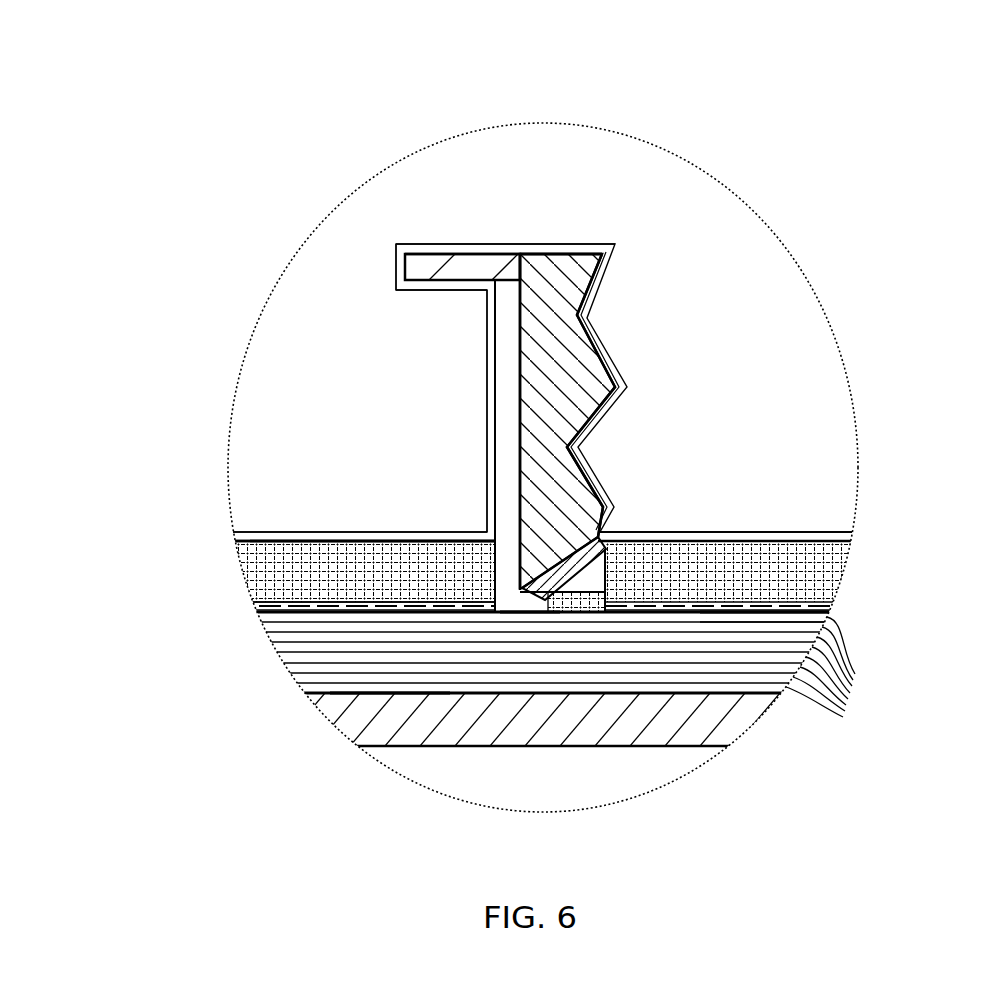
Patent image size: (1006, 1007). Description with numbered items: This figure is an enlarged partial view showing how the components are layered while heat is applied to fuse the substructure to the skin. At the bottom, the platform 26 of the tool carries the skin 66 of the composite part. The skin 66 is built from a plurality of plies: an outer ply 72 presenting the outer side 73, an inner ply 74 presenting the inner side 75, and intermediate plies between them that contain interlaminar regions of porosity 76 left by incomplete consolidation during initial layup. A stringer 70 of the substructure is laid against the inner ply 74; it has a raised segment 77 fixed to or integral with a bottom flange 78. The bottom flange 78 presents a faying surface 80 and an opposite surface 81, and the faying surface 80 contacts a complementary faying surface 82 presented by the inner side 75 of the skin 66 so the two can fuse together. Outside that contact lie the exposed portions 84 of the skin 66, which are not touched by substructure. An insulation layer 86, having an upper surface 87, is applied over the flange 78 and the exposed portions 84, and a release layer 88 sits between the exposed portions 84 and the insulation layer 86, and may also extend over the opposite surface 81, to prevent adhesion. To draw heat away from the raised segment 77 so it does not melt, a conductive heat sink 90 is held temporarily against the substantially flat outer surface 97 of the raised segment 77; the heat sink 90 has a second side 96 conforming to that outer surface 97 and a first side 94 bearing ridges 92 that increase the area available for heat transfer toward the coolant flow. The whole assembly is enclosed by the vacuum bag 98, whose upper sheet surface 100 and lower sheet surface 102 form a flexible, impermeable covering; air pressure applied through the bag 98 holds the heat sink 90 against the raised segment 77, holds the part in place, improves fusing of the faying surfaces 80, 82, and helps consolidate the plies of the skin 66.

The platform 26 is at (728, 705).
The skin 66 is at (265, 648).
The stringer 70 is at (413, 240).
The outer ply 72 is at (302, 693).
The outer side 73 is at (373, 697).
The inner ply 74 is at (257, 617).
The inner side 75 is at (818, 607).
The interlaminar regions of porosity 76 is at (834, 667).
The raised segment 77 is at (515, 408).
The bottom flange 78 is at (605, 533).
The faying surface 80 is at (530, 613).
The opposite surface 81 is at (592, 548).
The complementary faying surface 82 is at (585, 596).
The exposed portion 84 is at (325, 609).
The insulation layer 86 is at (345, 585).
The upper surface 87 is at (277, 540).
The release layer 88 is at (295, 598).
The conductive heat sink 90 is at (562, 278).
The ridges 92 is at (578, 367).
The first side 94 is at (607, 310).
The second side 96 is at (545, 290).
The outer surface 97 is at (517, 357).
The vacuum bag 98 is at (552, 243).
The upper sheet surface 100 is at (448, 532).
The lower sheet surface 102 is at (368, 545).